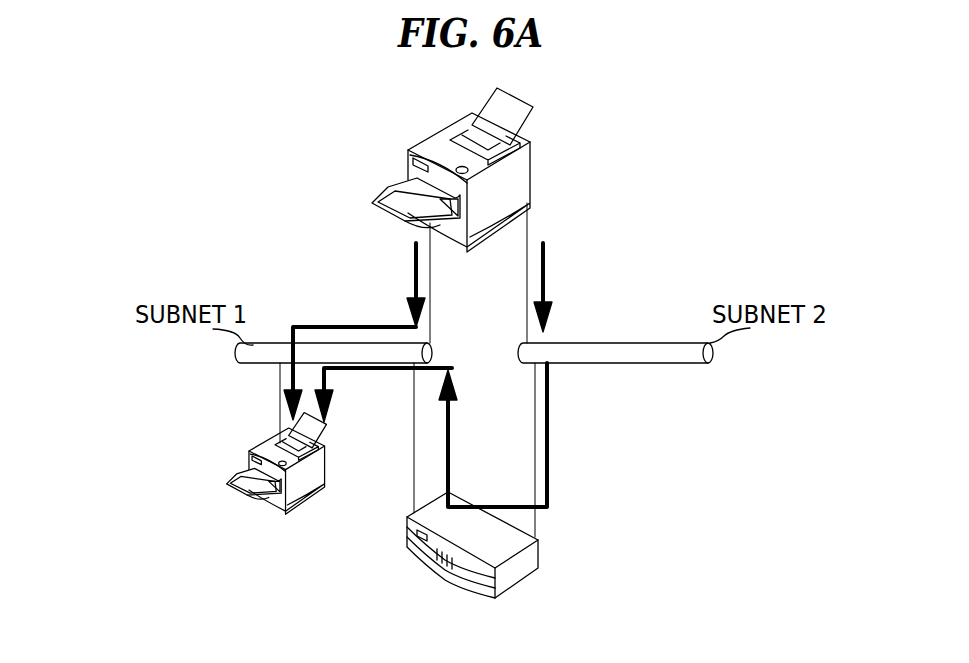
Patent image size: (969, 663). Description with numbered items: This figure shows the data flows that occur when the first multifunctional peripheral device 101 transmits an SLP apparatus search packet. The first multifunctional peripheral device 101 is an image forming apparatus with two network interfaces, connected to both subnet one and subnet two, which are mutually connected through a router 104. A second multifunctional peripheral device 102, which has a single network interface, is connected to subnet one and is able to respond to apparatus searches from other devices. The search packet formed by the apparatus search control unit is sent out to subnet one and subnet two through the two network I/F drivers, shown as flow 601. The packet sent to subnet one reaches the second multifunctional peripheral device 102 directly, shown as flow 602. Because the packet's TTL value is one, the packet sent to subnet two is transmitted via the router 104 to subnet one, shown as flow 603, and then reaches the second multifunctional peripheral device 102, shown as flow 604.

The first multifunctional peripheral device 101 is at (530, 160).
The second multifunctional peripheral device 102 is at (263, 443).
The router 104 is at (462, 588).
The data flow of SLP apparatus search packet sent to subnets 601 is at (420, 280).
The data flow of search packet reaching second device via subnet 1 602 is at (373, 325).
The data flow of search packet transmitted via router 603 is at (450, 467).
The data flow of search packet reaching second device via router 604 is at (347, 370).